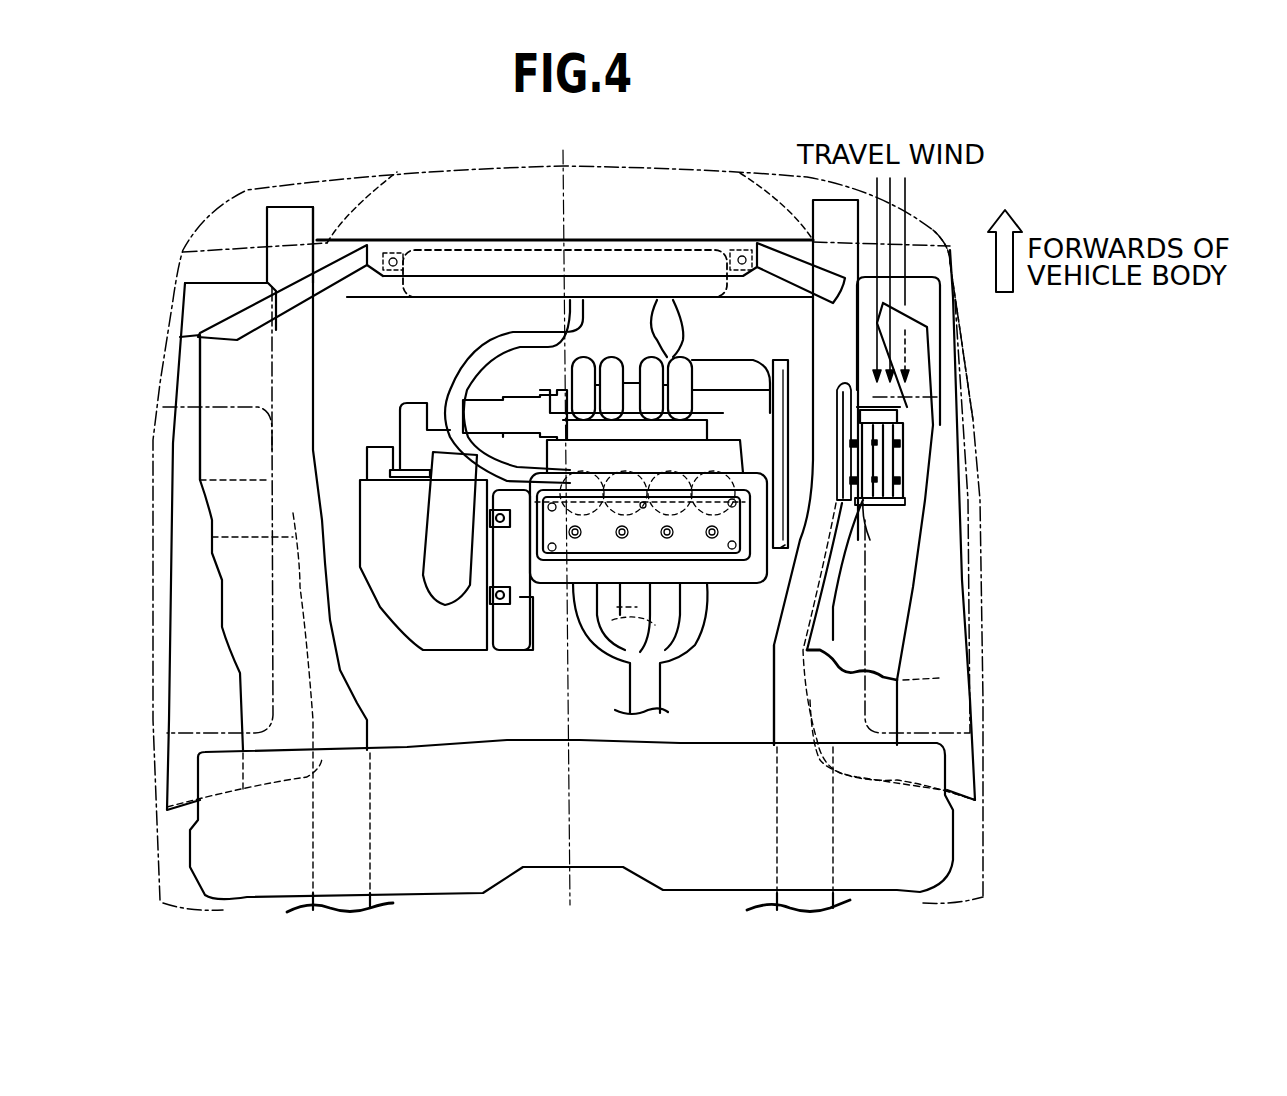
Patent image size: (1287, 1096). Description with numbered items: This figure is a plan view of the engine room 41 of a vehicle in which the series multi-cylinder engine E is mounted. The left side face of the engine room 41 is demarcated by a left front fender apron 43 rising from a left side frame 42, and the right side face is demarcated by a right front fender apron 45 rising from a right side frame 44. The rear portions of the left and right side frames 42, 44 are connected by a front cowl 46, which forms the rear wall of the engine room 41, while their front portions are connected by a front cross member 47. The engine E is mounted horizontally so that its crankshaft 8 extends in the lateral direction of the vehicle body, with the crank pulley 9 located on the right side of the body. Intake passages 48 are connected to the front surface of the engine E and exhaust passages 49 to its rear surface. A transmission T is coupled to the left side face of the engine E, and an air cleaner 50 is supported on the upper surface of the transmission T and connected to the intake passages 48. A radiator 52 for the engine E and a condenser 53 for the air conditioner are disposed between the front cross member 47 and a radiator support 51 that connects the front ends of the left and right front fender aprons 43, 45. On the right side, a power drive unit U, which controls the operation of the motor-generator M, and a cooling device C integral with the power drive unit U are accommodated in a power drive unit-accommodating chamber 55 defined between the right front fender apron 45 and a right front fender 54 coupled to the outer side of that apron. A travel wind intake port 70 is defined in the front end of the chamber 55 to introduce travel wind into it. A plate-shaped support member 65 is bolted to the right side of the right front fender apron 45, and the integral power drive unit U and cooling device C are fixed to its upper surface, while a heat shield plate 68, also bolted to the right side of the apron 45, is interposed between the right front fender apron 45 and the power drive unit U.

The crankshaft 8 is at (760, 473).
The crank pulley 9 is at (803, 443).
The engine room 41 is at (748, 678).
The left side frame 42 is at (307, 380).
The left front fender apron 43 is at (322, 677).
The right side frame 44 is at (823, 330).
The right front fender apron 45 is at (810, 600).
The front cowl 46 is at (677, 755).
The front cross member 47 is at (388, 292).
The intake passages 48 is at (677, 362).
The exhaust passages 49 is at (657, 622).
The air cleaner 50 is at (452, 637).
The radiator support 51 is at (558, 238).
The radiator 52 is at (715, 288).
The condenser 53 is at (477, 288).
The right front fender 54 is at (967, 357).
The power drive unit-accommodating chamber 55 is at (912, 542).
The support member 65 is at (905, 432).
The heat shield plate 68 is at (852, 400).
The travel wind intake port 70 is at (910, 270).
The transmission T is at (378, 453).
The engine E is at (565, 629).
The motor-generator M is at (787, 547).
The power drive unit U is at (870, 540).
The cooling device C is at (900, 468).